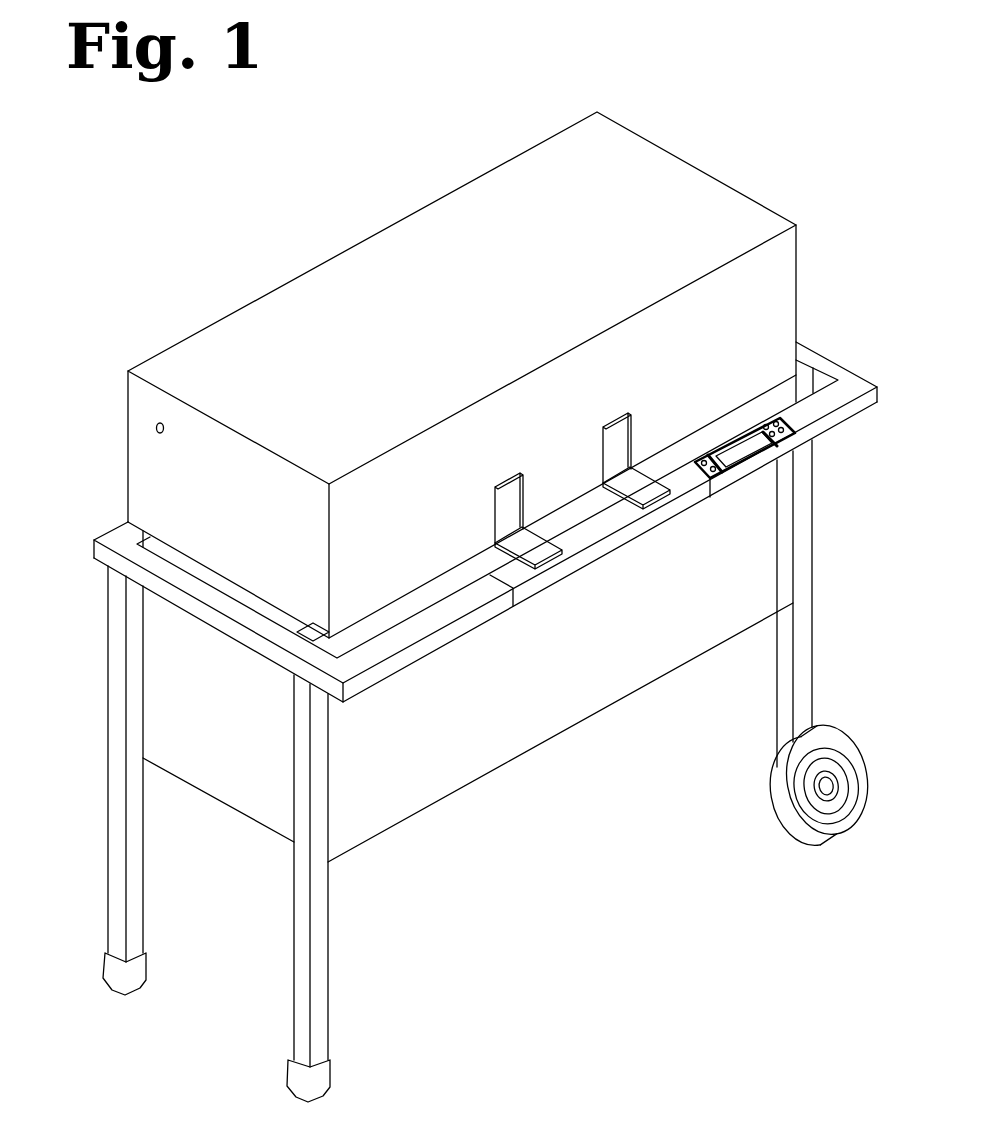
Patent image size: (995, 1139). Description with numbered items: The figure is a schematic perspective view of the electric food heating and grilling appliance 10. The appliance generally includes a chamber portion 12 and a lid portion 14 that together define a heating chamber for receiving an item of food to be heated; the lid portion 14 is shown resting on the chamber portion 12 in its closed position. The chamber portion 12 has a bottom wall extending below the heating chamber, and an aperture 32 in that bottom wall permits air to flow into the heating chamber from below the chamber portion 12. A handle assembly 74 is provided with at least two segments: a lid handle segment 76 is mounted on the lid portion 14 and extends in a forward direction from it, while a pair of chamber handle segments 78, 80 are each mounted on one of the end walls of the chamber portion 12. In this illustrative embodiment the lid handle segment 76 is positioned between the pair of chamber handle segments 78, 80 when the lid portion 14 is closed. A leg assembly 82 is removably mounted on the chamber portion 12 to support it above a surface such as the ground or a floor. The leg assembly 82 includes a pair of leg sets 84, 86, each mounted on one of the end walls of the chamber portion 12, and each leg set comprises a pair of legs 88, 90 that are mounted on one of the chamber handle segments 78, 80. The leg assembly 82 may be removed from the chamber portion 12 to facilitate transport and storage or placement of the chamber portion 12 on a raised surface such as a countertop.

The food heating and grilling appliance 10 is at (250, 216).
The chamber portion 12 is at (205, 725).
The lid portion 14 is at (118, 418).
The aperture 32 is at (152, 436).
The handle assembly 74 is at (440, 763).
The lid handle segment 76 is at (623, 530).
The chamber handle segment 78 is at (480, 617).
The chamber handle segment 80 is at (815, 407).
The leg assembly 82 is at (130, 1033).
The leg set 84 is at (116, 796).
The leg set 86 is at (802, 697).
The leg 88 is at (132, 850).
The leg 90 is at (317, 1042).